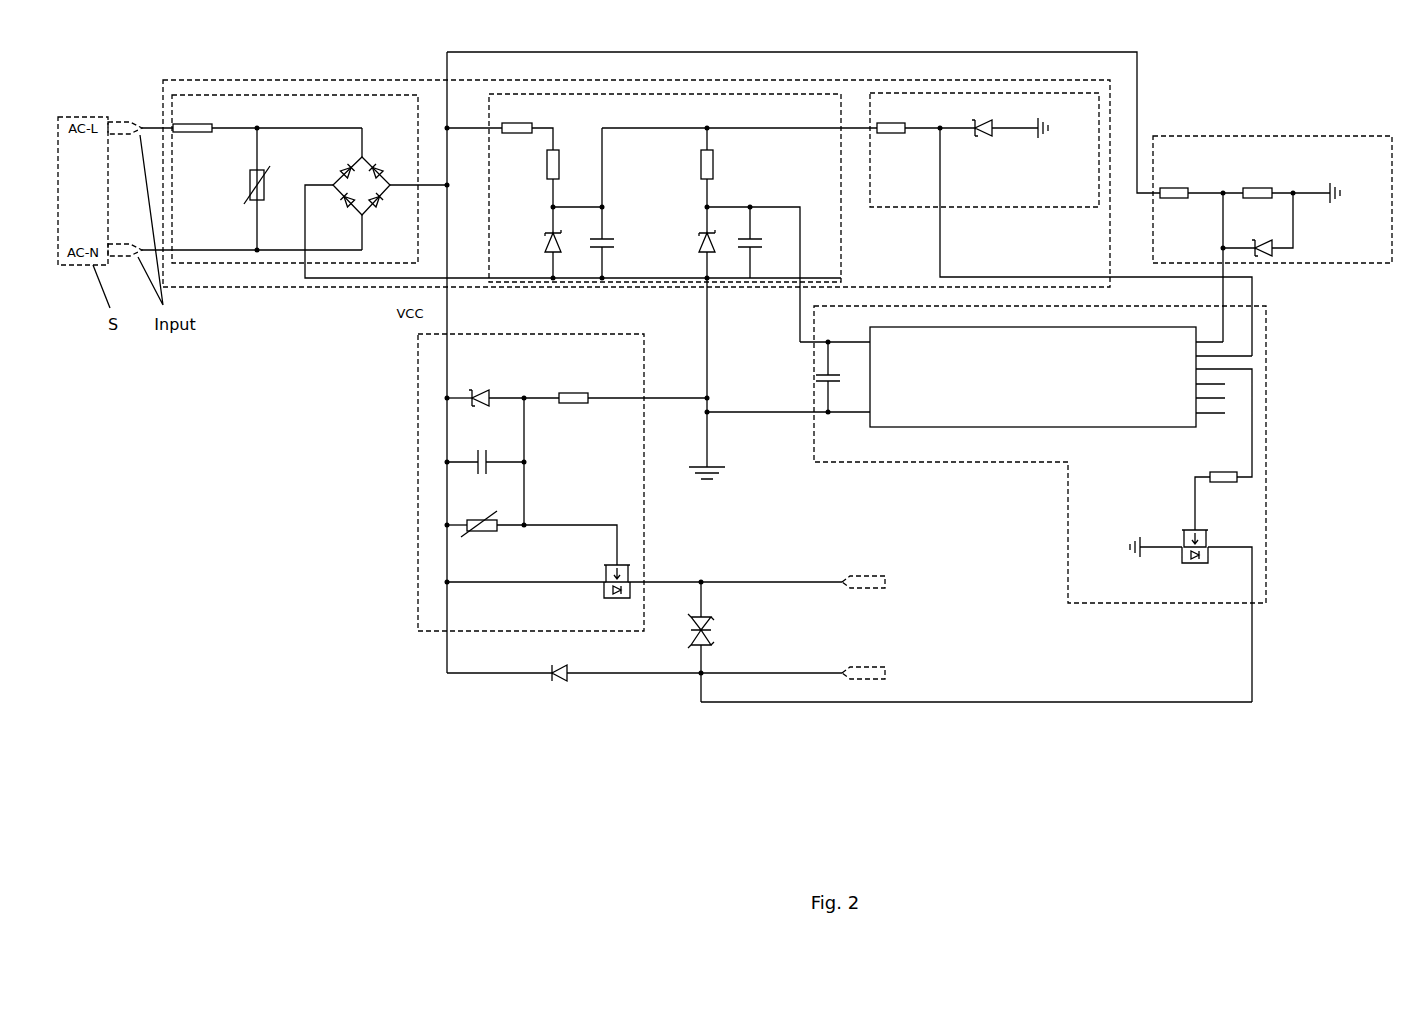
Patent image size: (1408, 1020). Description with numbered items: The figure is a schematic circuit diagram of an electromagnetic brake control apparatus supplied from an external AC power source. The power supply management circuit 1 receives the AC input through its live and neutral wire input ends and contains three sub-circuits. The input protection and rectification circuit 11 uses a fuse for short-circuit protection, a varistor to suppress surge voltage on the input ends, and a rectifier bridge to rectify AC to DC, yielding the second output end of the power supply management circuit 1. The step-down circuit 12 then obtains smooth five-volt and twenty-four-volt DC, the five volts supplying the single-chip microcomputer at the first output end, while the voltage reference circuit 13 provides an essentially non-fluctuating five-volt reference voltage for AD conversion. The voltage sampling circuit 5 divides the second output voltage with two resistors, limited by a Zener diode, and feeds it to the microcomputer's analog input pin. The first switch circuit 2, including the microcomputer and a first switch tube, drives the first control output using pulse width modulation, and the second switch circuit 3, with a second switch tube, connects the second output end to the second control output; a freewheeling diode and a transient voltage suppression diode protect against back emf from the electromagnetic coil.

The power supply management circuit 1 is at (307, 79).
The input protection and rectification circuit 11 is at (222, 93).
The step-down circuit 12 is at (630, 93).
The voltage reference circuit 13 is at (955, 93).
The voltage sampling circuit 5 is at (1278, 137).
The first switch circuit 2 is at (1267, 432).
The second switch circuit 3 is at (417, 519).